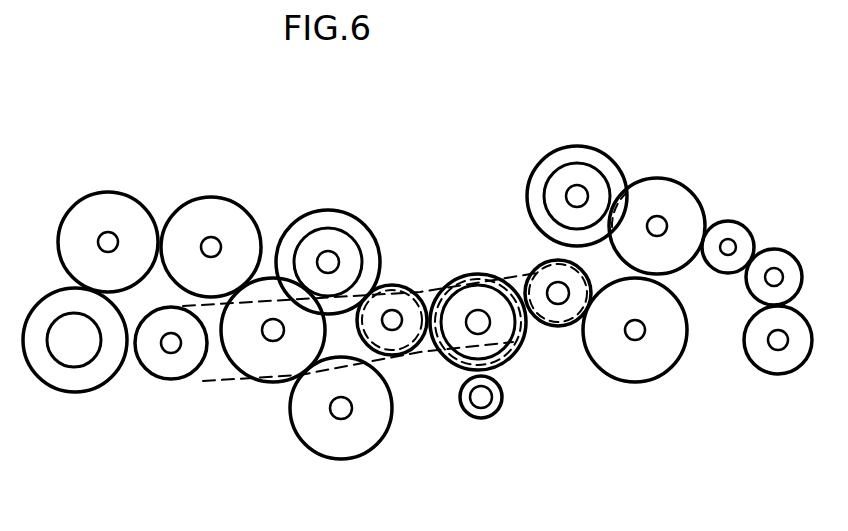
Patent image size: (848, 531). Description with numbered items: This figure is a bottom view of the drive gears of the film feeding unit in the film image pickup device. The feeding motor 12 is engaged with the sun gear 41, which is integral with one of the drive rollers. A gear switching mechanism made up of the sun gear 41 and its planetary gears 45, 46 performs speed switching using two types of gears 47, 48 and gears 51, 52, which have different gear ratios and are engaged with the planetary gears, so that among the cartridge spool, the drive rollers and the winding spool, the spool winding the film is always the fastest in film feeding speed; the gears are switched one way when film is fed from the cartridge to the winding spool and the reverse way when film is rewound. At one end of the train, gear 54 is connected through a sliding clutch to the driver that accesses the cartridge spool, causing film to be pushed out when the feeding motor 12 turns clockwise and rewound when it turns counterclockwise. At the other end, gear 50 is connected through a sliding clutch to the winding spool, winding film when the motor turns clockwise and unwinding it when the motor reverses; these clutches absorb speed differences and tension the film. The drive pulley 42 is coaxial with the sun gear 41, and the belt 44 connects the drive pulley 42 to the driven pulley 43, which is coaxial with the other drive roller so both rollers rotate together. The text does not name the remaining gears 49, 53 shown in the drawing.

The feeding motor 12 is at (478, 418).
The sun gear 41 is at (463, 272).
The drive pulley 42 is at (513, 363).
The driven pulley 43 is at (160, 377).
The belt 44 is at (203, 383).
The planetary gear 45 is at (543, 263).
The planetary gear 46 is at (403, 282).
The gear 47 is at (640, 367).
The gear 48 is at (575, 152).
The pulley 49 is at (673, 190).
The gear 50 is at (768, 363).
The gear 51 is at (308, 218).
The gear 52 is at (335, 440).
The pulley 53 is at (258, 362).
The gear 54 is at (57, 377).